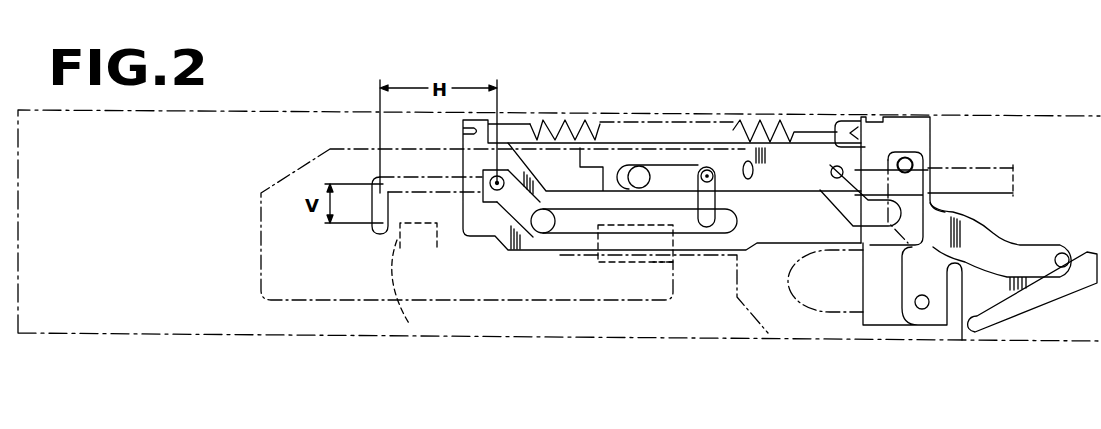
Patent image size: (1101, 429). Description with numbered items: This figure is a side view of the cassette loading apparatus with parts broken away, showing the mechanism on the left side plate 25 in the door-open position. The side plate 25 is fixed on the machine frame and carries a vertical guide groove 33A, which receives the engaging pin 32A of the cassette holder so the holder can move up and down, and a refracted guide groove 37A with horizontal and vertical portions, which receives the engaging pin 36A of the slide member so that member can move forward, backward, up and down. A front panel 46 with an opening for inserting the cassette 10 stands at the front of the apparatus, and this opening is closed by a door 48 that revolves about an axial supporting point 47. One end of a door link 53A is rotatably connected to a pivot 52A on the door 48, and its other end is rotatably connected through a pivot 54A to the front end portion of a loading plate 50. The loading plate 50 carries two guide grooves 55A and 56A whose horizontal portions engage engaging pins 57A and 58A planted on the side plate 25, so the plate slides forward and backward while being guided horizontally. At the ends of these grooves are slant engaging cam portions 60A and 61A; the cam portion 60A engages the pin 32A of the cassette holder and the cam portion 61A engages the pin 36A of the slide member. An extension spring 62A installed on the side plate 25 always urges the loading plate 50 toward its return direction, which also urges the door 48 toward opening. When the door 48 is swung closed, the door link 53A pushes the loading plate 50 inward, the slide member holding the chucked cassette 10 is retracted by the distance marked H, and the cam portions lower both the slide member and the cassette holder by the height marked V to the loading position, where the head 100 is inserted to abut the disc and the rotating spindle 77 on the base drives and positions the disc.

The cassette 10 is at (963, 168).
The left side plate 25 is at (347, 150).
The head 100 is at (410, 325).
The guide groove 37A is at (438, 192).
The engaging cam portion 61A is at (488, 228).
The engaging pin 58A is at (538, 233).
The engaging pin 36A is at (500, 178).
The extension spring 62A is at (564, 128).
The engaging pin 57A is at (648, 168).
The vertical guide groove 33A is at (697, 195).
The engaging pin 32A is at (709, 172).
The guide groove 55A is at (752, 160).
The engaging cam portion 60A is at (828, 172).
The front panel 46 is at (898, 133).
The pivot 54A is at (908, 158).
The door link 53A is at (987, 215).
The pivot 52A is at (1065, 252).
The door 48 is at (1028, 312).
The axial supporting point 47 is at (922, 309).
The loading plate 50 is at (774, 250).
The guide groove 56A is at (566, 220).
The rotating spindle 77 is at (624, 218).